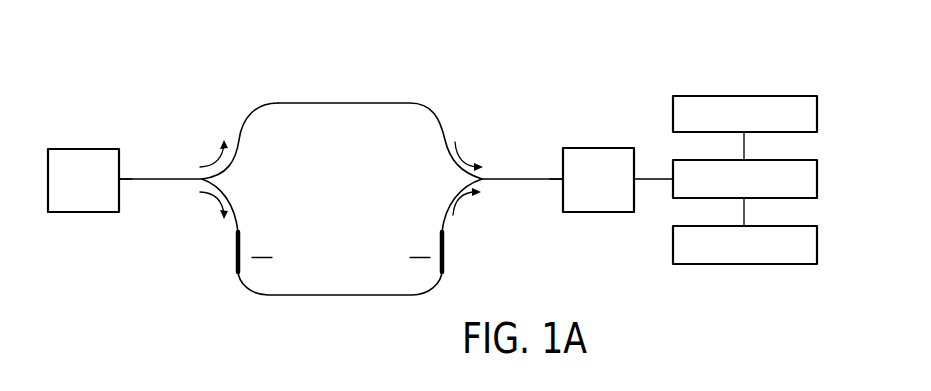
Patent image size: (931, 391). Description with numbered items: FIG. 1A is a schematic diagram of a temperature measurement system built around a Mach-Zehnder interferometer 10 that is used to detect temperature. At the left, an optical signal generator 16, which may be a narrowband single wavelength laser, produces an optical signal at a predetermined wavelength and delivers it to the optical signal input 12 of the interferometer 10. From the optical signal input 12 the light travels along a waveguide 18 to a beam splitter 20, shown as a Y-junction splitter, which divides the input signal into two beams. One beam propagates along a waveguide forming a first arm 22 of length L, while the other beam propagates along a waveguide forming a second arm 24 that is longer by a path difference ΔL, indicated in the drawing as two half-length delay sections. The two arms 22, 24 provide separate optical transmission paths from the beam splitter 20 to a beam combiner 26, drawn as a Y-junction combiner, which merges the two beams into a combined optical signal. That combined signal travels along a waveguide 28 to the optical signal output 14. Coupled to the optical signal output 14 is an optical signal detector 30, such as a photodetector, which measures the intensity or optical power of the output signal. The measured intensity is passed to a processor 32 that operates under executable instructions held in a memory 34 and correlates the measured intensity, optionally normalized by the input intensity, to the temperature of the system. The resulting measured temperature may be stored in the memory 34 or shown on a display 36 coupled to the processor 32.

The Mach-Zehnder interferometer 10 is at (218, 48).
The optical signal input 12 is at (120, 178).
The optical signal output 14 is at (562, 178).
The optical signal generator 16 is at (80, 148).
The waveguide 18 is at (167, 181).
The beam splitter 20 is at (202, 178).
The first arm 22 is at (340, 103).
The second arm 24 is at (340, 296).
The beam combiner 26 is at (484, 178).
The waveguide 28 is at (513, 180).
The optical signal detector 30 is at (600, 148).
The processor 32 is at (817, 178).
The memory 34 is at (817, 113).
The display 36 is at (817, 245).